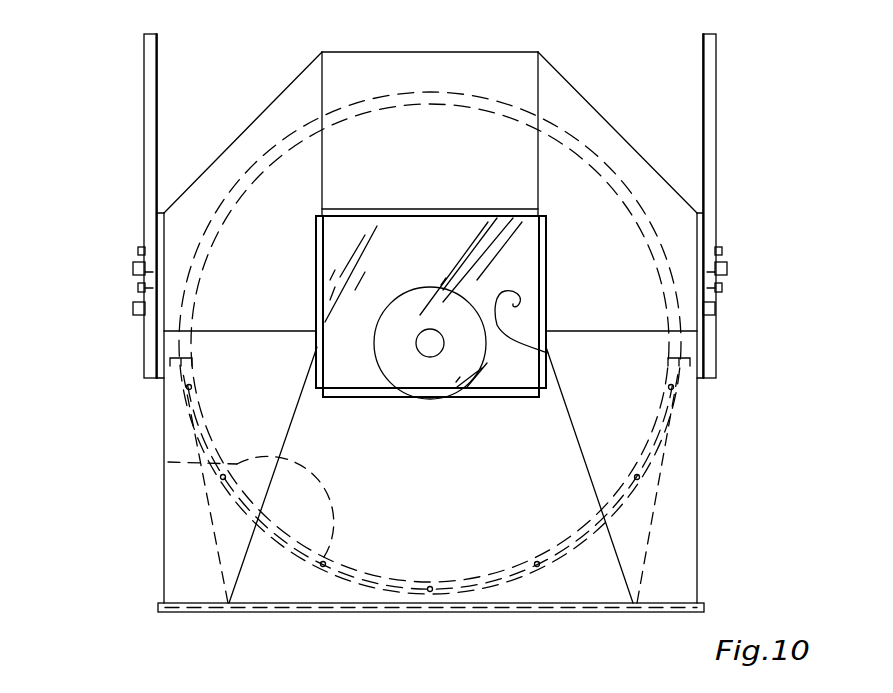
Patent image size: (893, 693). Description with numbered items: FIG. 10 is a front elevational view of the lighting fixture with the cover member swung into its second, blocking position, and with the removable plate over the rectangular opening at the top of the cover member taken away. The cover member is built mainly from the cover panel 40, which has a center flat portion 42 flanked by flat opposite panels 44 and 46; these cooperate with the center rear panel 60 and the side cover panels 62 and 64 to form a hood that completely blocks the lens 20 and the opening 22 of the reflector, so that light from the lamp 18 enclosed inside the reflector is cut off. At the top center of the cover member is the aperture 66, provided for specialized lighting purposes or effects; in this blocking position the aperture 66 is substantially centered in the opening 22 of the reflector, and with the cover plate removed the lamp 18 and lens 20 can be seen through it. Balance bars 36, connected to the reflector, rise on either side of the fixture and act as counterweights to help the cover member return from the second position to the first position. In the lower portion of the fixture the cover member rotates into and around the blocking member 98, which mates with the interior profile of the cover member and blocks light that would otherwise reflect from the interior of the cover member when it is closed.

The lamp 18 is at (388, 382).
The lens 20 is at (548, 353).
The opening 22 is at (163, 463).
The balance bars 36 is at (148, 45).
The cover panel 40 is at (698, 484).
The center flat portion 42 is at (431, 476).
The flat opposite panel 44 is at (164, 547).
The flat opposite panel 46 is at (698, 512).
The center rear panel 60 is at (448, 52).
The side cover panel 62 is at (262, 111).
The side cover panel 64 is at (625, 138).
The aperture 66 is at (322, 253).
The blocking member 98 is at (648, 542).